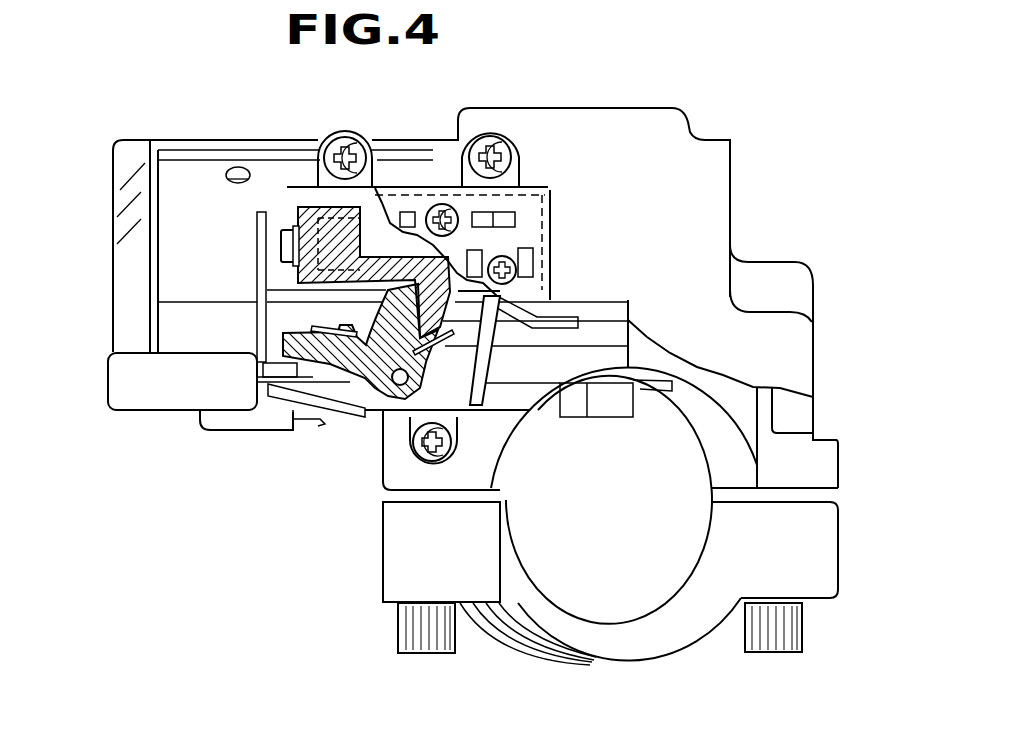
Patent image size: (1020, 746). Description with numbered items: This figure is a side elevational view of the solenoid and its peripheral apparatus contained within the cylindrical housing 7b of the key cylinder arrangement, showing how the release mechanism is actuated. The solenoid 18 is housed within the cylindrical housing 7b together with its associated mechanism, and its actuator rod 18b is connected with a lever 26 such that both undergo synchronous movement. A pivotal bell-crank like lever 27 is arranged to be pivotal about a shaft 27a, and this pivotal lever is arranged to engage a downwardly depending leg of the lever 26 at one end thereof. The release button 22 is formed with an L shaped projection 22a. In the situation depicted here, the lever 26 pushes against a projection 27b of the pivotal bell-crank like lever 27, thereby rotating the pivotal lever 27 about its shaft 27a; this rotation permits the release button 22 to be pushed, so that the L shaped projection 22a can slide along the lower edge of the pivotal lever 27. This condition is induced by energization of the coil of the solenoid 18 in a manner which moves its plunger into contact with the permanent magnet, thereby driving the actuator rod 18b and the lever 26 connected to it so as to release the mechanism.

The cylindrical housing 7b is at (413, 138).
The solenoid 18 is at (303, 208).
The actuator rod 18b is at (283, 243).
The release button 22 is at (150, 413).
The L shaped projection 22a is at (281, 388).
The lever 26 is at (468, 297).
The pivotal bell-crank like lever 27 is at (322, 358).
The shaft 27a is at (403, 398).
The projection 27b is at (315, 328).